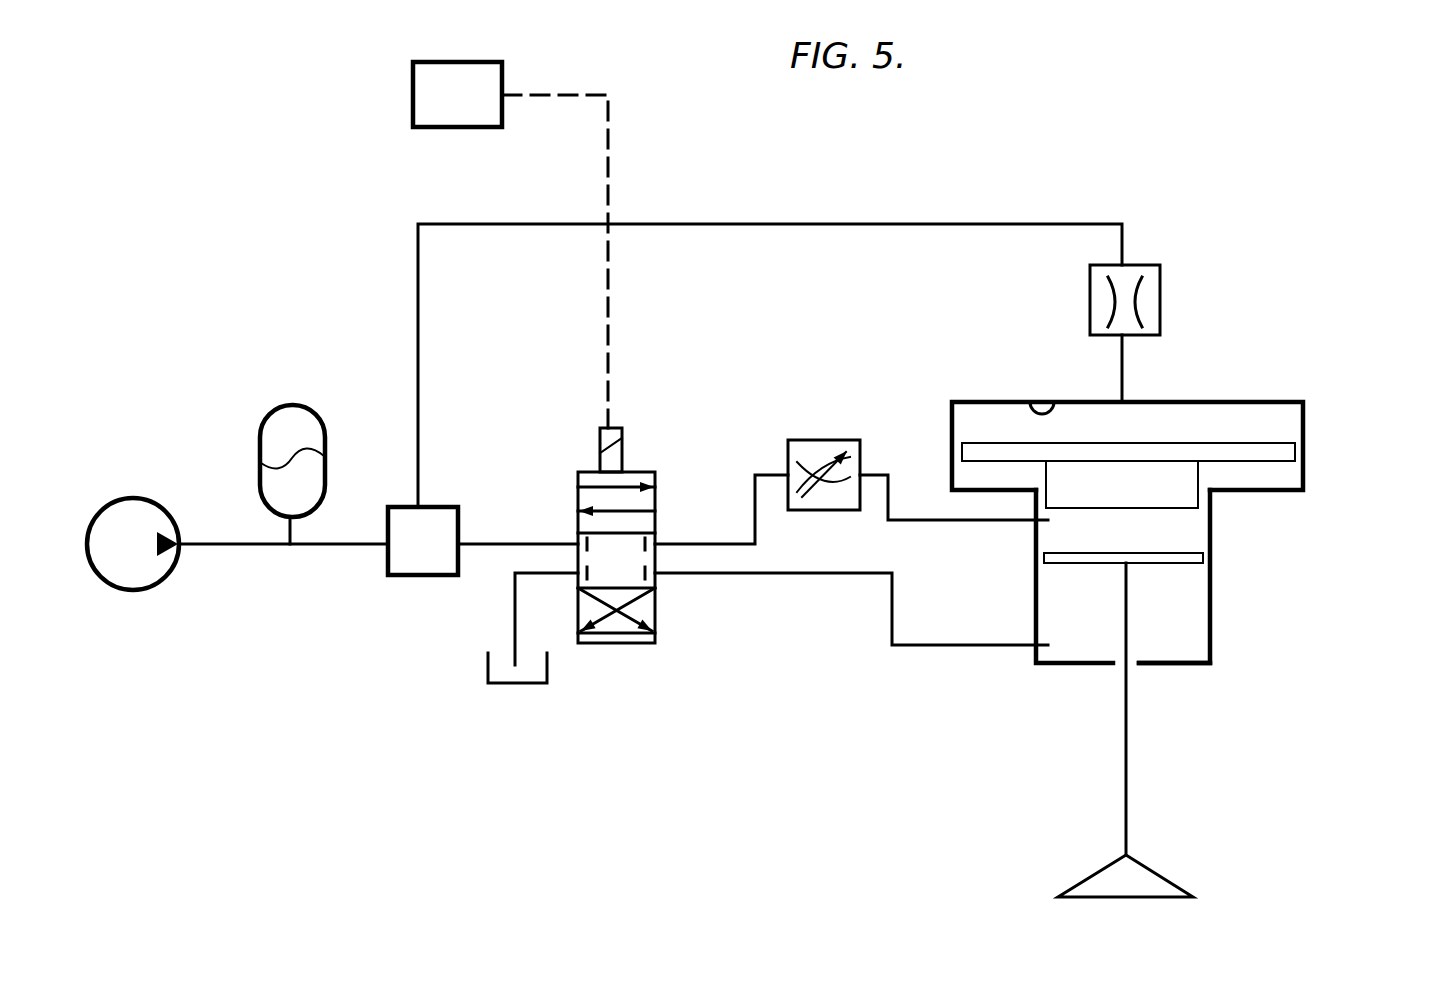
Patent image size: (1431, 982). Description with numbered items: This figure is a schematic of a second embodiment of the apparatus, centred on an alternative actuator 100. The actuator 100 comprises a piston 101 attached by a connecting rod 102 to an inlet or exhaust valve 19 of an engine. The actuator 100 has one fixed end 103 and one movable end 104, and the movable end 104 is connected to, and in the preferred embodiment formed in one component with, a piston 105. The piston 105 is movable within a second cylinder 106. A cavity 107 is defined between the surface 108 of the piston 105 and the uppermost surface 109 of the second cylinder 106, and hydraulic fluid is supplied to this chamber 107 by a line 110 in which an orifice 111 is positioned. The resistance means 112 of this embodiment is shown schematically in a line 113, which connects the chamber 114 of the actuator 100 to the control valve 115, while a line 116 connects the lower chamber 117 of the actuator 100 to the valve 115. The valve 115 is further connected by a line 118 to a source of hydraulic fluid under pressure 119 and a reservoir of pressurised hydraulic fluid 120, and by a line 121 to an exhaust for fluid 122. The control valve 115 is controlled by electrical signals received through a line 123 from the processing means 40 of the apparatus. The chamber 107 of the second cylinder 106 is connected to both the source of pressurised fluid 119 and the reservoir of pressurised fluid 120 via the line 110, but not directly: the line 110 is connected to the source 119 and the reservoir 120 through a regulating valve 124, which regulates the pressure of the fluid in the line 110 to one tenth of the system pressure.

The inlet or exhaust valve 19 is at (1163, 873).
The processing means 40 is at (413, 92).
The actuator 100 is at (1212, 628).
The piston 101 is at (1183, 570).
The connecting rod 102 is at (1127, 785).
The fixed end 103 is at (1167, 663).
The movable end 104 is at (1183, 513).
The piston 105 is at (1295, 452).
The second cylinder 106 is at (1305, 415).
The cavity 107 is at (1206, 411).
The surface of the piston 108 is at (988, 440).
The uppermost surface of the second cylinder 109 is at (1050, 400).
The line 110 is at (1125, 358).
The orifice 111 is at (1160, 275).
The resistance means 112 is at (828, 440).
The line 113 is at (908, 520).
The chamber 114 is at (1048, 527).
The control valve 115 is at (637, 470).
The line 116 is at (907, 648).
The lower chamber 117 is at (1062, 612).
The line 118 is at (495, 544).
The source of hydraulic fluid under pressure 119 is at (112, 497).
The reservoir of pressurised hydraulic fluid 120 is at (268, 420).
The line 121 is at (515, 605).
The exhaust for fluid 122 is at (510, 684).
The line 123 is at (608, 295).
The regulating valve 124 is at (388, 560).